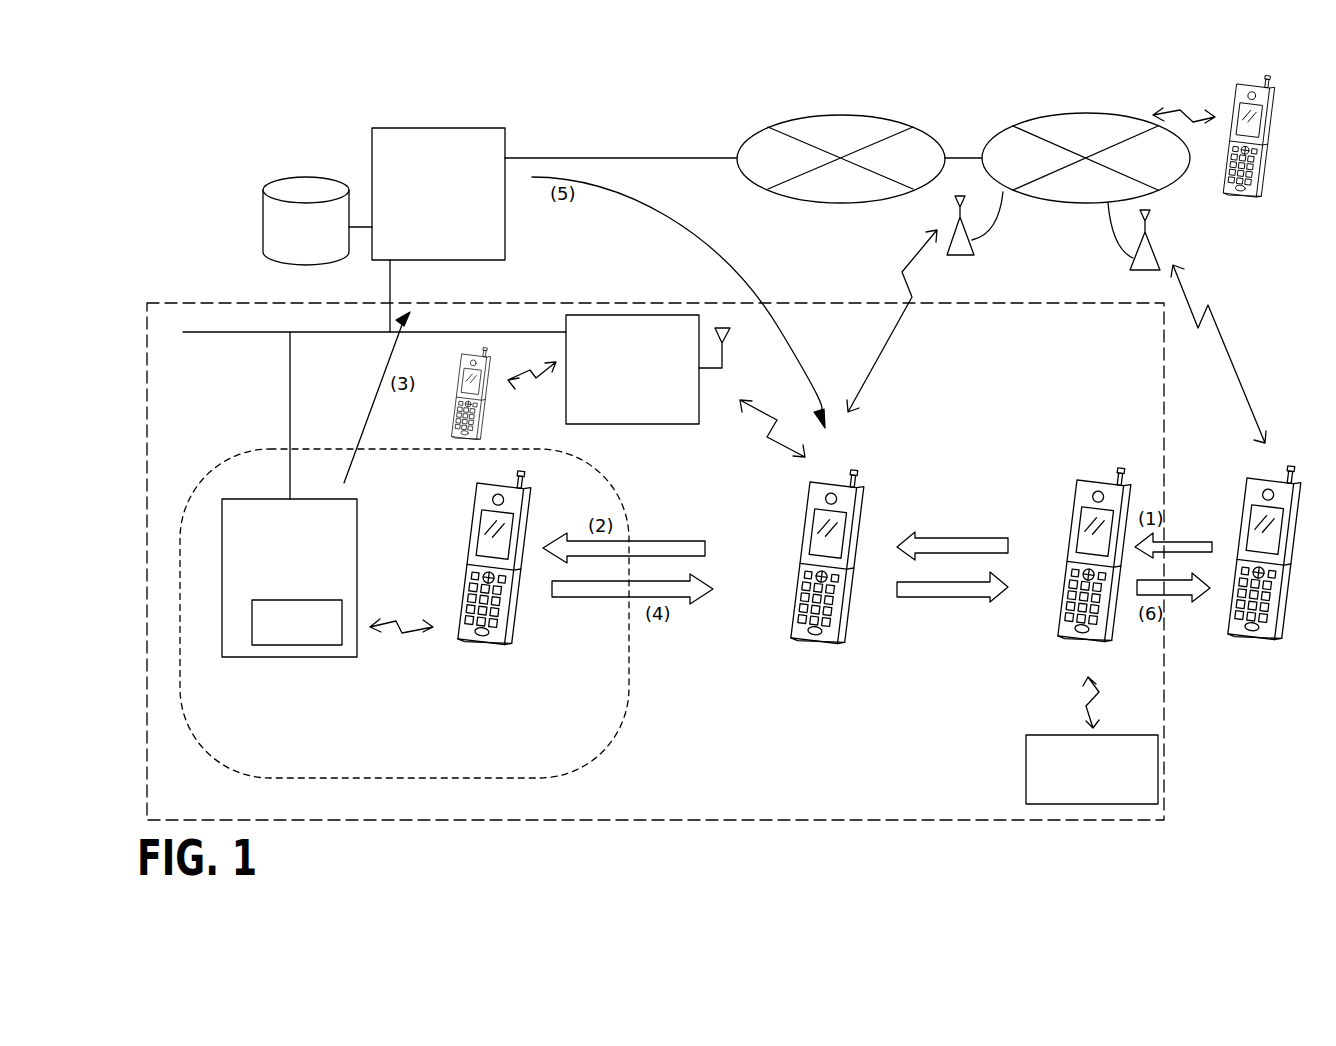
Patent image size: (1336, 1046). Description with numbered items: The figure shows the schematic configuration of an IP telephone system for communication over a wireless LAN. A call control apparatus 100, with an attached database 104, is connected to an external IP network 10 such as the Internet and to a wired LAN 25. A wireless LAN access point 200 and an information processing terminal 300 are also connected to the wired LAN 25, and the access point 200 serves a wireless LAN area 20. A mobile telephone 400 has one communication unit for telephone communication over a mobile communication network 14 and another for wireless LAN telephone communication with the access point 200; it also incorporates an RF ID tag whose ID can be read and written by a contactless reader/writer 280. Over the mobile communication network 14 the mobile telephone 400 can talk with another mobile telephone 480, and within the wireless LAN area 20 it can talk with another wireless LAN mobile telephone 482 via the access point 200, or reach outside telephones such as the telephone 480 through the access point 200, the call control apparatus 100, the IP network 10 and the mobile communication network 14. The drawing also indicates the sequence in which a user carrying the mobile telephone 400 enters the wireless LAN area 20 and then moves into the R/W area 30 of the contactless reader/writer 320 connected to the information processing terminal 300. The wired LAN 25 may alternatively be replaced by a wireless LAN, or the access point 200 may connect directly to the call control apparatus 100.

The IP network 10 is at (768, 189).
The mobile communication network 14 is at (1068, 199).
The wireless LAN area 20 is at (966, 348).
The wired LAN 25 is at (259, 356).
The R/W area 30 is at (323, 755).
The call control apparatus 100 is at (411, 165).
The DB 104 is at (322, 231).
The wireless LAN access point 200 is at (611, 353).
The contactless reader/writer device 280 is at (1049, 771).
The information processing terminal 300 is at (263, 535).
The contactless reader/writer 320 is at (291, 633).
The mobile telephone 400 is at (547, 640).
The mobile telephone 480 is at (1277, 206).
The wireless LAN mobile telephone 482 is at (513, 402).